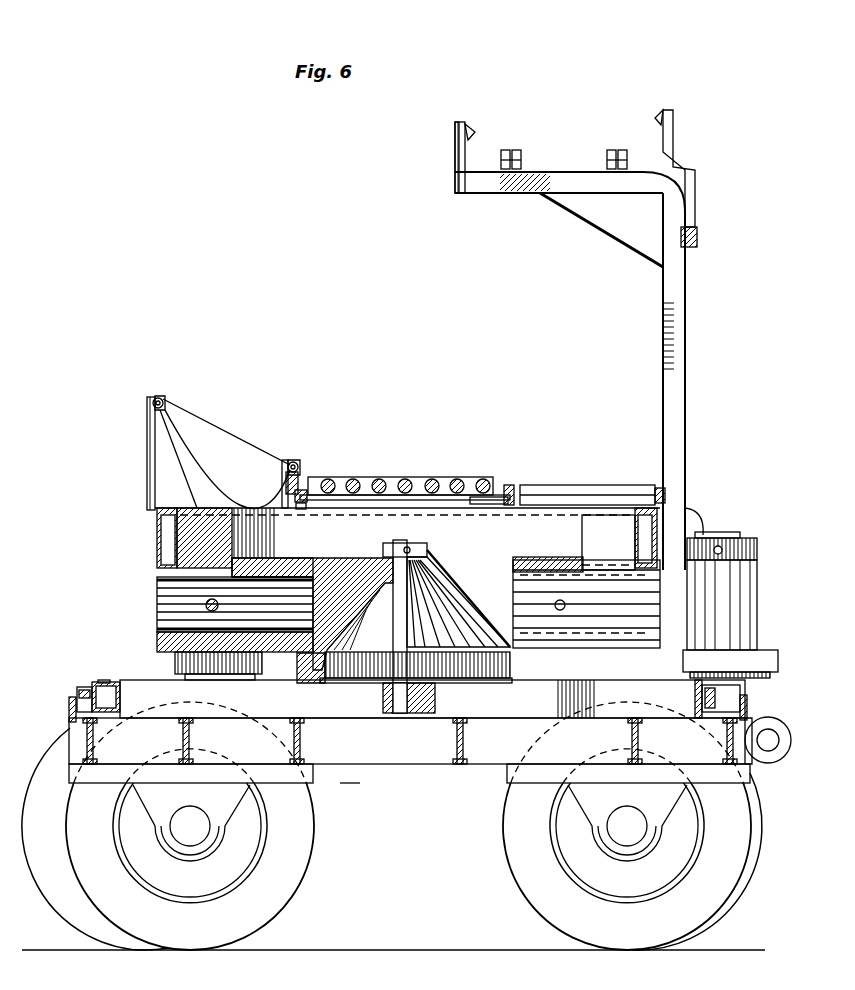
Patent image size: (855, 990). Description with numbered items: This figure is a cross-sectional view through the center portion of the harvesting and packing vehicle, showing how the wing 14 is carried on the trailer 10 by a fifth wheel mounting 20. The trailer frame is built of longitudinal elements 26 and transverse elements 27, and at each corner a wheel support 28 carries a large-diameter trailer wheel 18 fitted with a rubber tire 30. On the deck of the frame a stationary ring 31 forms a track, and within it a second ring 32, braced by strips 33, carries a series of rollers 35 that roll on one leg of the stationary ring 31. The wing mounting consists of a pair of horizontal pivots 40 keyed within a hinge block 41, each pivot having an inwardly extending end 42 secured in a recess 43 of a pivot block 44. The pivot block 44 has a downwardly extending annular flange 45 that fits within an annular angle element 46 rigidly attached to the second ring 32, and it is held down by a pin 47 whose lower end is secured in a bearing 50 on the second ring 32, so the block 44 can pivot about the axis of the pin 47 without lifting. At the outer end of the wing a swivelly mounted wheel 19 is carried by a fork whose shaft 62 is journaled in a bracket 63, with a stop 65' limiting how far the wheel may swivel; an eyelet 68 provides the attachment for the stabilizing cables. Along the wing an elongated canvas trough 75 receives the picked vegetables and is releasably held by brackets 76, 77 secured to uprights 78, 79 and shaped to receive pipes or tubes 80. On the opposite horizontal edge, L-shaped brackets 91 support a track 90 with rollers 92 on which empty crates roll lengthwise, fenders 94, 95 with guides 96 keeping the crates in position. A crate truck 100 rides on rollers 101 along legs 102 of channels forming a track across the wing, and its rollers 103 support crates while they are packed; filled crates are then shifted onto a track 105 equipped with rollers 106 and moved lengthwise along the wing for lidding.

The trailer 10 is at (345, 784).
The wing 14 is at (157, 532).
The trailer wheel 18 is at (293, 911).
The swivelly mounted wheel 19 is at (48, 907).
The fifth wheel mounting 20 is at (104, 682).
The longitudinal element 26 is at (413, 764).
The transverse element 27 is at (69, 732).
The wheel support 28 is at (228, 822).
The rubber tire 30 is at (310, 862).
The stationary ring 31 is at (68, 707).
The second ring 32 is at (120, 692).
The strip 33 is at (590, 692).
The roller 35 is at (83, 687).
The pivot 40 is at (157, 590).
The hinge block 41 is at (157, 638).
The inwardly extending end 42 is at (285, 562).
The recess 43 is at (320, 572).
The pivot block 44 is at (440, 565).
The annular flange 45 is at (516, 668).
The annular angle element 46 is at (310, 684).
The pin 47 is at (393, 702).
The bearing 50 is at (436, 702).
The shaft 62 is at (735, 533).
The bracket 63 is at (758, 572).
The stop 65' is at (738, 650).
The eyelet 68 is at (775, 720).
The canvas trough 75 is at (195, 484).
The bracket 76 is at (168, 406).
The bracket 77 is at (297, 474).
The upright 78 is at (148, 449).
The upright 79 is at (281, 468).
The pipe or tube 80 is at (160, 397).
The track 90 is at (528, 172).
The L-shaped bracket 91 is at (685, 350).
The roller 92 is at (516, 150).
The fender 94 is at (686, 131).
The fender 95 is at (457, 153).
The guide 96 is at (470, 128).
The crate truck 100 is at (420, 478).
The roller 101 is at (305, 490).
The leg 102 is at (305, 511).
The roller 103 is at (380, 478).
The track 105 is at (686, 506).
The roller 106 is at (605, 478).